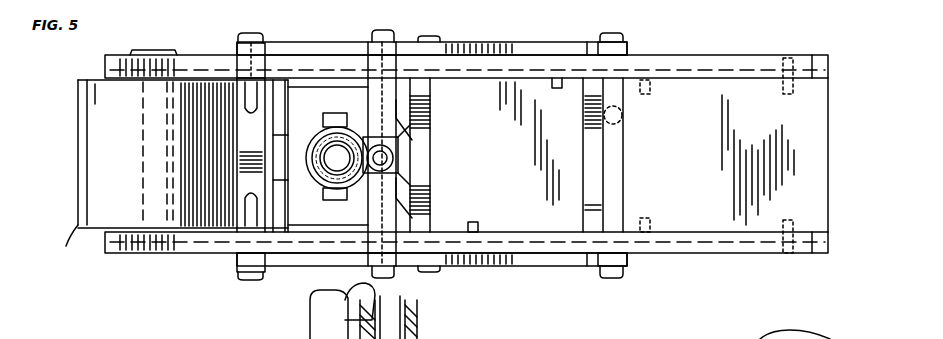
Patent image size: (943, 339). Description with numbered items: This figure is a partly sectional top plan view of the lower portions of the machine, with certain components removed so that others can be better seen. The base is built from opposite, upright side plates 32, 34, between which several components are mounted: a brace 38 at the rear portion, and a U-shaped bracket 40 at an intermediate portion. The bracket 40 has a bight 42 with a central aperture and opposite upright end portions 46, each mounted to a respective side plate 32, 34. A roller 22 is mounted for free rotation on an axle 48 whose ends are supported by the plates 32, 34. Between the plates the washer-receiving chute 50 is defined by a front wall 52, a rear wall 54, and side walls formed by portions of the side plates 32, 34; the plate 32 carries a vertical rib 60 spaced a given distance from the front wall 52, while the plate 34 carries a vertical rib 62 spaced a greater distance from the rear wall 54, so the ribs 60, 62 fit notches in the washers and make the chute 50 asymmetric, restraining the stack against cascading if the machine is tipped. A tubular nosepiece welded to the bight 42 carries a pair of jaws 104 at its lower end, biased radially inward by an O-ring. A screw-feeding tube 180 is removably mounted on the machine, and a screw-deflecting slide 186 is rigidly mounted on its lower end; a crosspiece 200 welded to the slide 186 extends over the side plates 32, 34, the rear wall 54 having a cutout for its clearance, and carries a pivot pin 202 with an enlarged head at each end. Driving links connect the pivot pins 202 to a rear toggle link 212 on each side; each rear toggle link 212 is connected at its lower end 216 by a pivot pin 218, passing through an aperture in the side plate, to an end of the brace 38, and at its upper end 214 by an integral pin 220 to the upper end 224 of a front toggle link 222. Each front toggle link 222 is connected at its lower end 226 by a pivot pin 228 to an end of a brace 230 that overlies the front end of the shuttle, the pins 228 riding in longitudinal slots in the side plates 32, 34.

The side plate 34 is at (735, 58).
The side plate 32 is at (705, 248).
The lower end of rear toggle link 216 is at (238, 48).
The upper end of rear toggle link 214 is at (510, 42).
The rear toggle link 212 is at (272, 42).
The pivot pin 218 is at (238, 36).
The pivot pin 202 is at (368, 37).
The upper end of front toggle link 224 is at (436, 27).
The integral pin 220 is at (444, 44).
The front toggle link 222 is at (590, 289).
The lower end of front toggle link 226 is at (627, 46).
The pivot pin 228 is at (623, 34).
The roller 22 is at (78, 228).
The axle 48 is at (150, 143).
The U-shaped bracket 40 is at (286, 152).
The bight 42 is at (300, 117).
The end portion of bracket 46 is at (322, 91).
The jaws 104 is at (345, 113).
The screw-feeding tube 180 is at (405, 153).
The screw-deflecting slide 186 is at (400, 140).
The crosspiece 200 is at (410, 200).
The rear wall 54 is at (420, 110).
The vertical rib 62 is at (556, 84).
The front wall 52 is at (585, 128).
The brace 230 is at (615, 146).
The brace 38 is at (250, 192).
The vertical rib 60 is at (476, 228).
The washer-receiving chute 50 is at (535, 282).